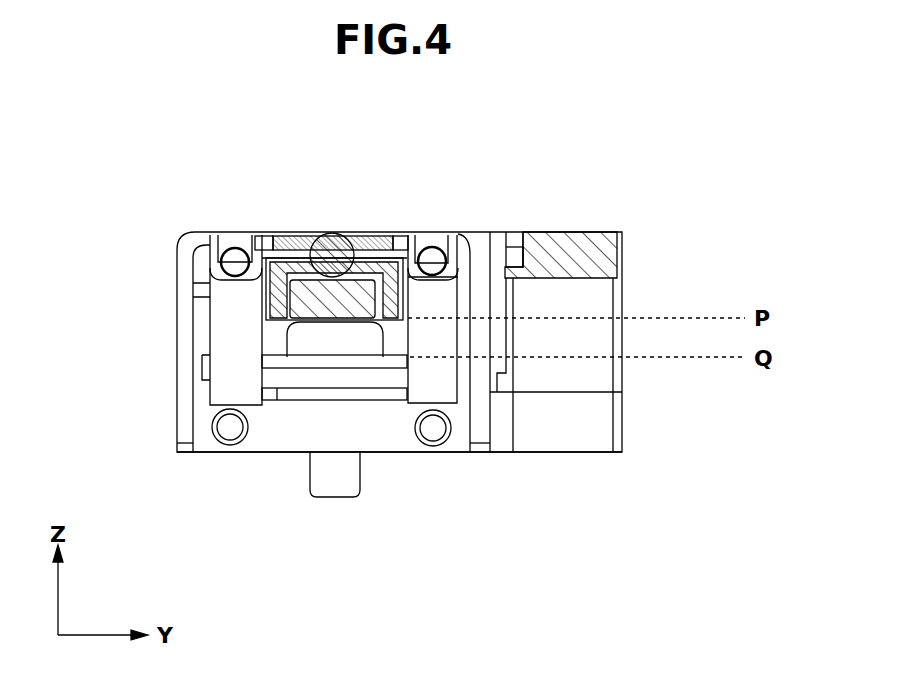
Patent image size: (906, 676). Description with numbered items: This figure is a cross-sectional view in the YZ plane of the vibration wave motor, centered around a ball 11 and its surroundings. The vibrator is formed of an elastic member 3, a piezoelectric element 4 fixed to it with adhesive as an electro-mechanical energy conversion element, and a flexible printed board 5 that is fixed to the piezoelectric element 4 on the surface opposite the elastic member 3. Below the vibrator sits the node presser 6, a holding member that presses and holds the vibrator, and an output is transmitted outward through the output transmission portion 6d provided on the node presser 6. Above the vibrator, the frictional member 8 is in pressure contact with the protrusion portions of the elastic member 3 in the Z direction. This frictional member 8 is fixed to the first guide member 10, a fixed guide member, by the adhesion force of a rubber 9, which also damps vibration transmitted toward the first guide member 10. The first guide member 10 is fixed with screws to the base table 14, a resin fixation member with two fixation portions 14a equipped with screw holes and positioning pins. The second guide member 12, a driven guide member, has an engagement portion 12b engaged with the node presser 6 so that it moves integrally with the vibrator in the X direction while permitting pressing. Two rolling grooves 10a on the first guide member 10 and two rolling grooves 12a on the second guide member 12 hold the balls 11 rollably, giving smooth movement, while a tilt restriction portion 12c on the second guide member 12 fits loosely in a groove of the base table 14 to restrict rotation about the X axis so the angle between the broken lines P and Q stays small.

The elastic member 3 is at (275, 367).
The piezoelectric element 4 is at (273, 380).
The flexible printed board 5 is at (603, 388).
The node presser 6 is at (387, 455).
The output transmission portion 6d is at (335, 488).
The frictional member 8 is at (303, 305).
The rubber 9 is at (305, 273).
The first guide member 10 is at (262, 291).
The rolling grooves 10a is at (421, 262).
The ball 11 is at (331, 245).
The second guide member 12 is at (192, 231).
The rolling grooves 12a is at (360, 236).
The engagement portion 12b is at (187, 437).
The tilt restriction portion 12c is at (508, 250).
The base table 14 is at (619, 258).
The fixation portions 14a is at (535, 250).